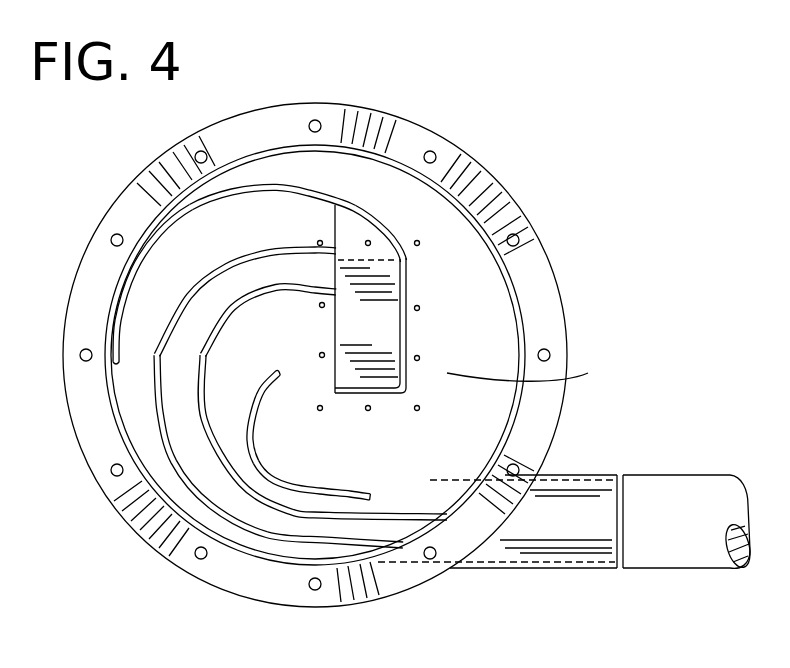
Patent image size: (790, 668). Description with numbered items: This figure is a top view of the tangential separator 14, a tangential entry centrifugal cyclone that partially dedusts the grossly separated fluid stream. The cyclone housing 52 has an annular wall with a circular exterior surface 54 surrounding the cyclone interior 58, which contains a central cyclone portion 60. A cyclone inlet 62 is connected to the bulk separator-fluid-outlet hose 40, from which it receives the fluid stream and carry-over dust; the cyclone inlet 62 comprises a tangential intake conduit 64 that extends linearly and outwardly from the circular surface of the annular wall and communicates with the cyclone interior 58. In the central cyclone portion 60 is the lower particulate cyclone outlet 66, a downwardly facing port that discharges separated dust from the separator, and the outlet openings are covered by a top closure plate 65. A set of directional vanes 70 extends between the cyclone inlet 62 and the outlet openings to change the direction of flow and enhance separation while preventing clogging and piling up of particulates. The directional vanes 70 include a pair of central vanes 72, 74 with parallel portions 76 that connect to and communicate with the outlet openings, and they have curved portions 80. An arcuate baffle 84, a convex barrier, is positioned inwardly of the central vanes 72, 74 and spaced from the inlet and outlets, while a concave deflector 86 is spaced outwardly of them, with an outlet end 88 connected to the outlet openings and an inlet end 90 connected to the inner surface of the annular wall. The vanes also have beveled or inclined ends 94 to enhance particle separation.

The tangential separator 14 is at (318, 103).
The bulk separator-fluid-outlet hose 40 is at (678, 572).
The cyclone housing 52 is at (487, 233).
The circular exterior surface 54 is at (520, 405).
The cyclone interior 58 is at (415, 212).
The central cyclone portion 60 is at (532, 374).
The cyclone inlet 62 is at (620, 507).
The tangential intake conduit 64 is at (518, 572).
The top closure plate 65 is at (384, 322).
The lower particulate cyclone outlet 66 is at (409, 299).
The directional vanes 70 is at (238, 364).
The central vane 72 is at (235, 468).
The central vane 74 is at (150, 480).
The parallel portions 76 is at (155, 413).
The curved portions 80 is at (230, 542).
The arcuate baffle 84 is at (278, 472).
The concave deflector 86 is at (232, 190).
The outlet end 88 is at (404, 257).
The inlet end 90 is at (107, 370).
The beveled or inclined ends 94 is at (283, 373).